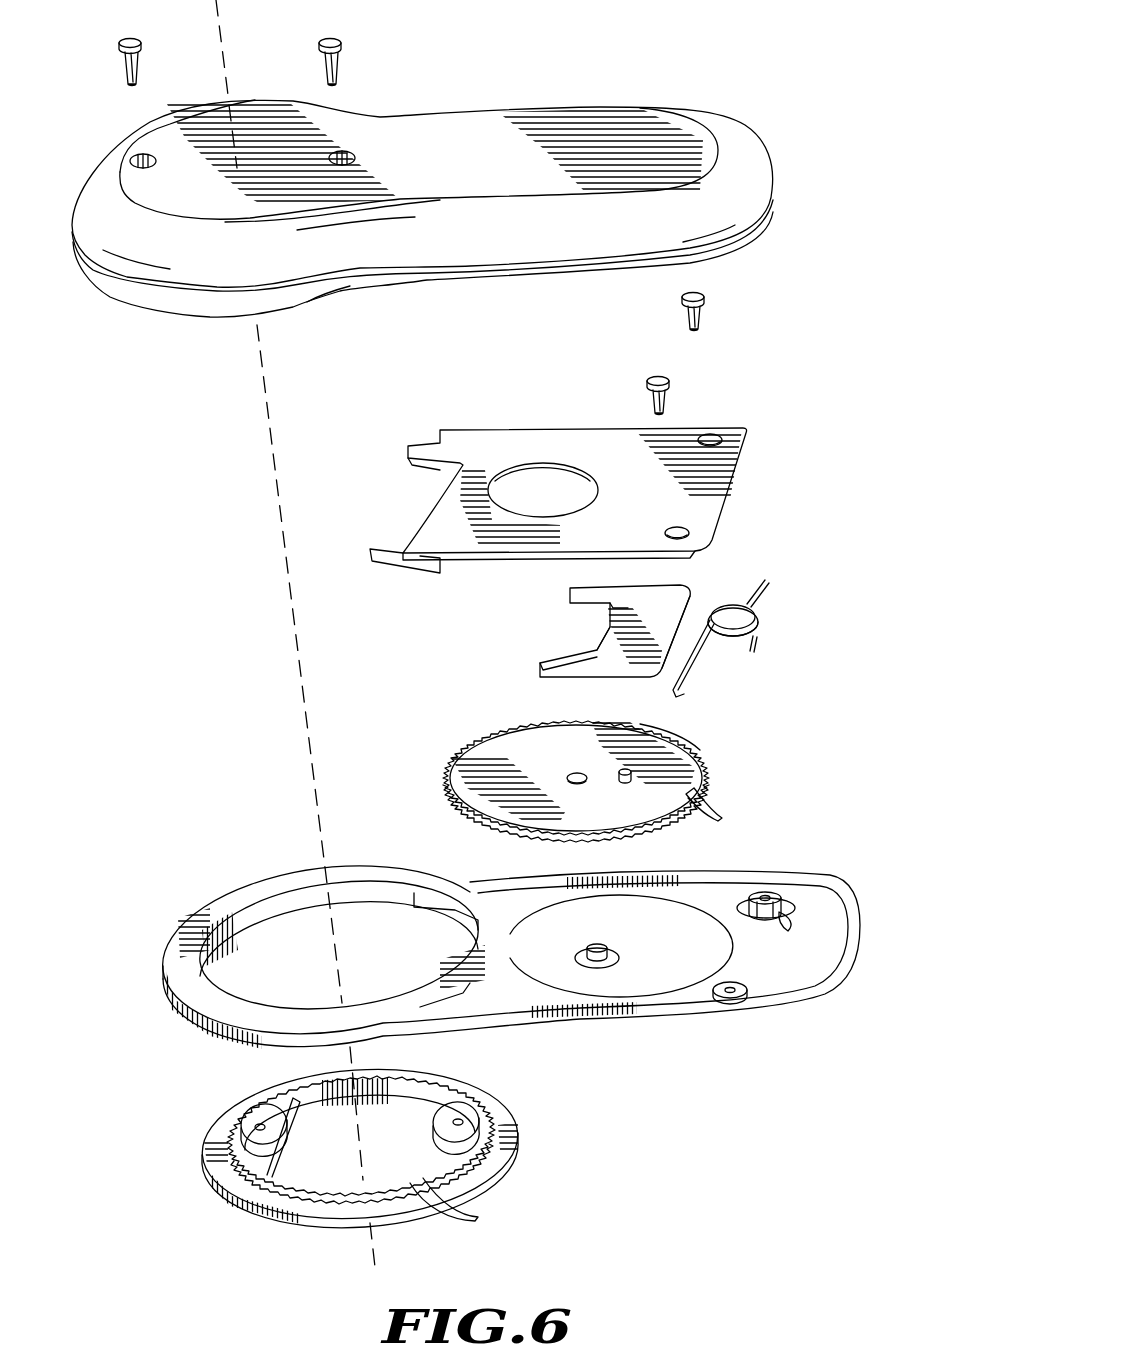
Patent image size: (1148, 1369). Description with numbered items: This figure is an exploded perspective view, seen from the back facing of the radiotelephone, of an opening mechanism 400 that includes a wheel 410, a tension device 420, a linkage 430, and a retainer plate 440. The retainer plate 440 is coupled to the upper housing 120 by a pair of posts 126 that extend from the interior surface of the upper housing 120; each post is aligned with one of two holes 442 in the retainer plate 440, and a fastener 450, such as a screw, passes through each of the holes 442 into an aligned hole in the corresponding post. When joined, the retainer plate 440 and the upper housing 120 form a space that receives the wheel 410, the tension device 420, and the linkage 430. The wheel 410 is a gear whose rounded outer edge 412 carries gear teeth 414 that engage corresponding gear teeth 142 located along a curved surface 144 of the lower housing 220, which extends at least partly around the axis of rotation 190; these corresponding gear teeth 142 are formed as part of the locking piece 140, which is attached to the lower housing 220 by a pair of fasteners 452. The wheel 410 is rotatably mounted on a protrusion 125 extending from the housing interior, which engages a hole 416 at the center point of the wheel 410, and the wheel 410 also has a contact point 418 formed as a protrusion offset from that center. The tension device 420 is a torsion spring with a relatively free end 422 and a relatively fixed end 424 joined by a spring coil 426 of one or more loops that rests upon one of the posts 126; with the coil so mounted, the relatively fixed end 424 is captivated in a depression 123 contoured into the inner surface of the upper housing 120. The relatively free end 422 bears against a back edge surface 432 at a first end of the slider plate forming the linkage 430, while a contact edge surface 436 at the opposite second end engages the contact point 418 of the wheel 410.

The upper housing 120 is at (836, 928).
The depression 123 is at (789, 915).
The protrusion 125 is at (600, 943).
The posts 126 is at (766, 895).
The locking piece 140 is at (513, 1128).
The gear teeth 142 is at (475, 1221).
The curved surface 144 is at (467, 1093).
The axis of rotation 190 is at (305, 723).
The lower housing 220 is at (753, 160).
The opening mechanism 400 is at (832, 472).
The wheel 410 is at (693, 760).
The rounded outer edge 412 is at (677, 730).
The gear teeth 414 is at (712, 821).
The hole 416 is at (580, 773).
The contact point 418 is at (623, 783).
The tension device 420 is at (762, 610).
The relatively free end 422 is at (693, 667).
The relatively fixed end 424 is at (757, 642).
The spring coil 426 is at (767, 576).
The linkage 430 is at (598, 668).
The back edge surface 432 is at (687, 613).
The contact edge surface 436 is at (597, 650).
The retainer plate 440 is at (540, 440).
The holes 442 is at (710, 436).
The fastener 450 is at (705, 318).
The fasteners 452 is at (142, 60).